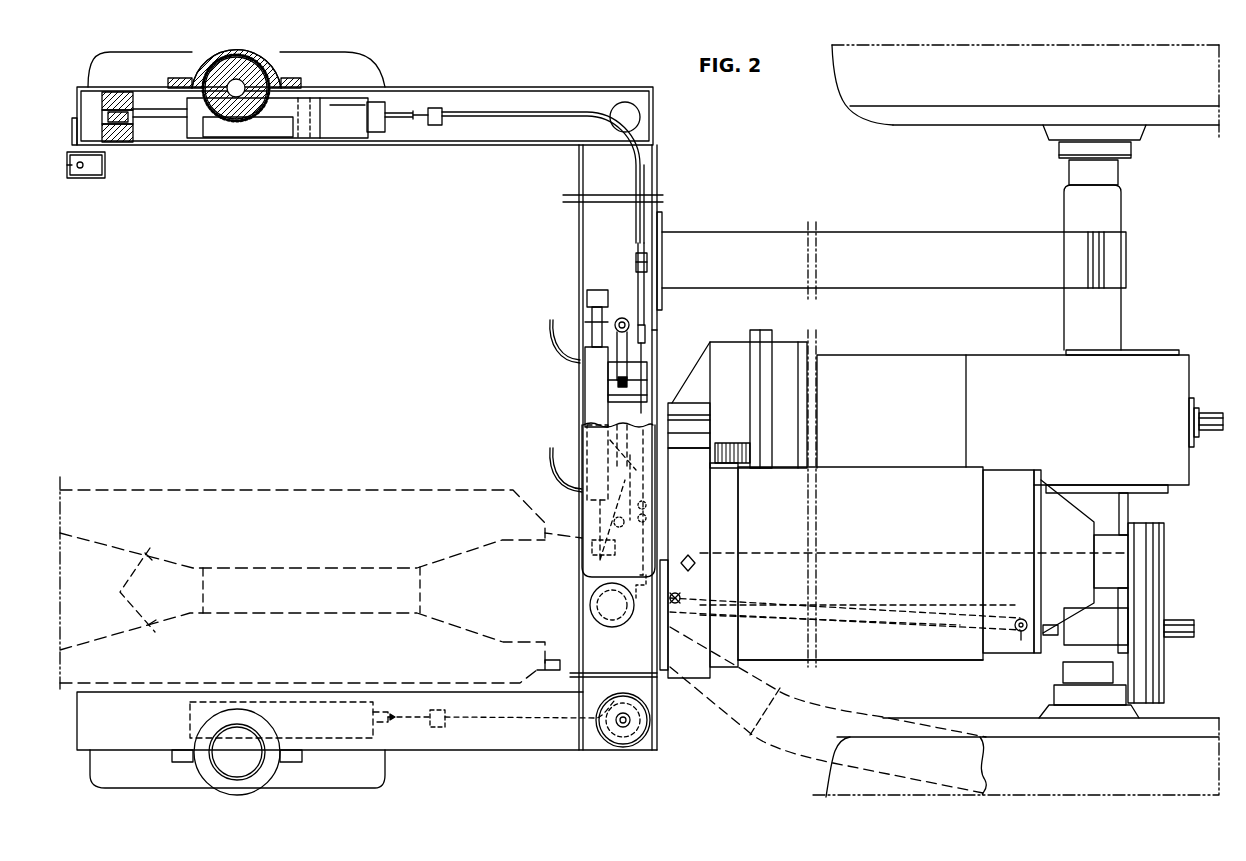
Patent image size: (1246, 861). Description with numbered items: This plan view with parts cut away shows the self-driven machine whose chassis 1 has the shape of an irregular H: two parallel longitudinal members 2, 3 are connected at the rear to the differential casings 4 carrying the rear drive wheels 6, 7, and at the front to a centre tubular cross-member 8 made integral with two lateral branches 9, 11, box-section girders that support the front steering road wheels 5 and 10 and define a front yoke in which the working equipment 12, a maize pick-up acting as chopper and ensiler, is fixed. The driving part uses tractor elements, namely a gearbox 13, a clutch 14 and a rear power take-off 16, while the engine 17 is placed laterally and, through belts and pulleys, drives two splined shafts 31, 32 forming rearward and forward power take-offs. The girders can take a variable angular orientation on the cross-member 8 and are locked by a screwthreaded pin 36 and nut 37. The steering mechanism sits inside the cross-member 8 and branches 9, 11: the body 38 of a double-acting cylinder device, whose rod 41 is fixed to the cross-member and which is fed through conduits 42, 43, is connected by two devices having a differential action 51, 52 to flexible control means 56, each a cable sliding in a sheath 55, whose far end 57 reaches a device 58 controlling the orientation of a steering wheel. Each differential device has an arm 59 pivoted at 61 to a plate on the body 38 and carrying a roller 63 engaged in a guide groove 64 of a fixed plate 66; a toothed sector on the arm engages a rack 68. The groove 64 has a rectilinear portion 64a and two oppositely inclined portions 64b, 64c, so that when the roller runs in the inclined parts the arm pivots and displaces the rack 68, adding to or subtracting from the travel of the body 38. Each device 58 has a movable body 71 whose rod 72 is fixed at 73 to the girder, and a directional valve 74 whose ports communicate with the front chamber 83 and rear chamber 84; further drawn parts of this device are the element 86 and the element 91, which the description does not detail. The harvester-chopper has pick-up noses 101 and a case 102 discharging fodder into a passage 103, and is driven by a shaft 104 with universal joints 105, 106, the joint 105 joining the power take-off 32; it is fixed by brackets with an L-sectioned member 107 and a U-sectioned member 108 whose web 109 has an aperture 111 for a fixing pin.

The chassis 1 is at (725, 232).
The longitudinal member 2 is at (940, 232).
The longitudinal member 3 is at (855, 555).
The differential casing 4 is at (1108, 215).
The front steering road wheel 5 is at (380, 765).
The rear drive wheel 6 is at (950, 97).
The rear drive wheel 7 is at (1173, 747).
The centre tubular cross-member 8 is at (580, 232).
The lateral branch 9 is at (478, 740).
The front steering road wheel 10 is at (382, 80).
The lateral branch 11 is at (420, 133).
The working equipment 12 is at (128, 490).
The gearbox 13 is at (897, 370).
The clutch 14 is at (788, 355).
The power take-off 16 is at (1203, 412).
The engine 17 is at (935, 658).
The splined shaft 31 is at (1180, 620).
The splined shaft 32 is at (1050, 636).
The screwthreaded pin 36 is at (633, 735).
The nut 37 is at (618, 730).
The body of double-acting cylinder device 38 is at (590, 375).
The rod 41 is at (585, 322).
The conduit 42 is at (550, 470).
The conduit 43 is at (548, 337).
The device having a differential action 51 is at (658, 470).
The device having a differential action 52 is at (662, 342).
The sheath 55 is at (655, 197).
The flexible control means 56 is at (645, 285).
The end of flexible control means 57 is at (400, 113).
The device controlling the orientation 58 is at (290, 125).
The arm 59 is at (645, 332).
The pivot 61 is at (618, 382).
The roller 63 is at (622, 318).
The guide groove 64 is at (592, 590).
The rectilinear portion 64a is at (650, 520).
The inclined portion 64b is at (648, 506).
The inclined portion 64c is at (621, 596).
The fixed plate 66 is at (592, 566).
The rack 68 is at (640, 388).
The body 71 is at (340, 130).
The rod 72 is at (165, 118).
The fixing point 73 is at (118, 142).
The directional valve 74 is at (376, 128).
The front chamber 83 is at (197, 108).
The rear chamber 84 is at (353, 110).
The rack 86 is at (220, 128).
The gear housing 91 is at (245, 80).
The pick-up nose 101 is at (120, 592).
The case 102 is at (538, 665).
The passage 103 is at (712, 698).
The shaft 104 is at (852, 622).
The universal joint 105 is at (1016, 615).
The universal joint 106 is at (676, 604).
The L-sectioned member 107 is at (72, 125).
The U-sectioned member 108 is at (100, 172).
The web 109 is at (84, 172).
The aperture 111 is at (70, 172).